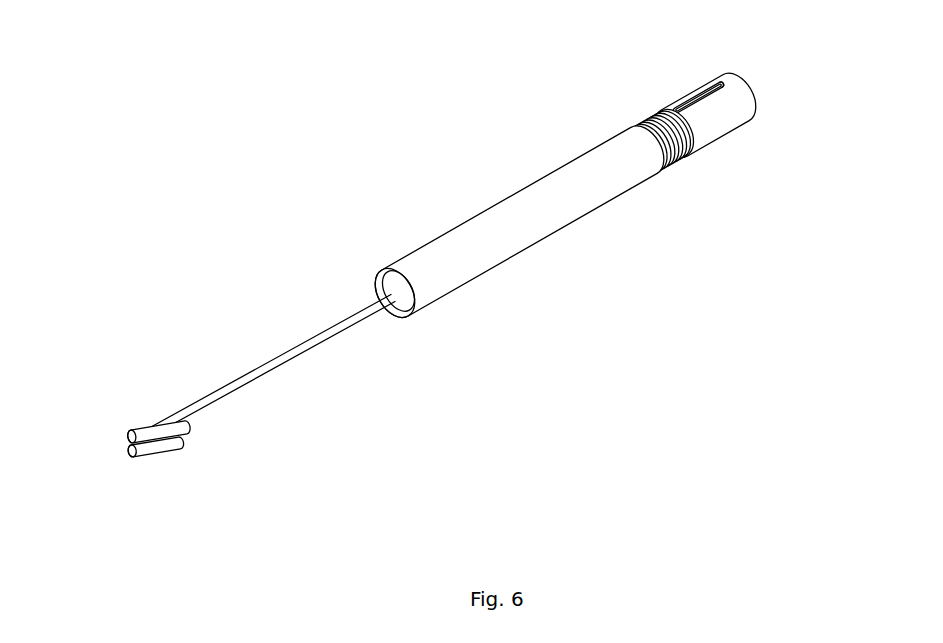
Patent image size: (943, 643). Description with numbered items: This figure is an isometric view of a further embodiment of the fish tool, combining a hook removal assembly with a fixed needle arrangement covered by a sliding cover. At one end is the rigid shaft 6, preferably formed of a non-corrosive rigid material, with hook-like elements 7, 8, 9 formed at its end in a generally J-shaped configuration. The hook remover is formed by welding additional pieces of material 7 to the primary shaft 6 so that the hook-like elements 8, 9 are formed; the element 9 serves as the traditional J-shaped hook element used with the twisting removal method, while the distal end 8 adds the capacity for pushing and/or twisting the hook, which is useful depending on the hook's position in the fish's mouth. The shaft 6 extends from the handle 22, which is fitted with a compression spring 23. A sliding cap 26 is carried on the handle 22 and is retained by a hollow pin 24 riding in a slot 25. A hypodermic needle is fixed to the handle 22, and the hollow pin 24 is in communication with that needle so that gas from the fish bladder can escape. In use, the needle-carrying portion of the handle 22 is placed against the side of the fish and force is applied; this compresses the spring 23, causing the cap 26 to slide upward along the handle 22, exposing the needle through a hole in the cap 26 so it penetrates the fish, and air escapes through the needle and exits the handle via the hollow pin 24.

The rigid shaft 6 is at (283, 352).
The hook-like element 7 is at (165, 445).
The distal end 8 is at (132, 450).
The hook-like element 9 is at (168, 430).
The handle 22 is at (525, 210).
The compression spring 23 is at (681, 163).
The hollow pin 24 is at (678, 104).
The slot 25 is at (720, 72).
The sliding cap 26 is at (727, 110).